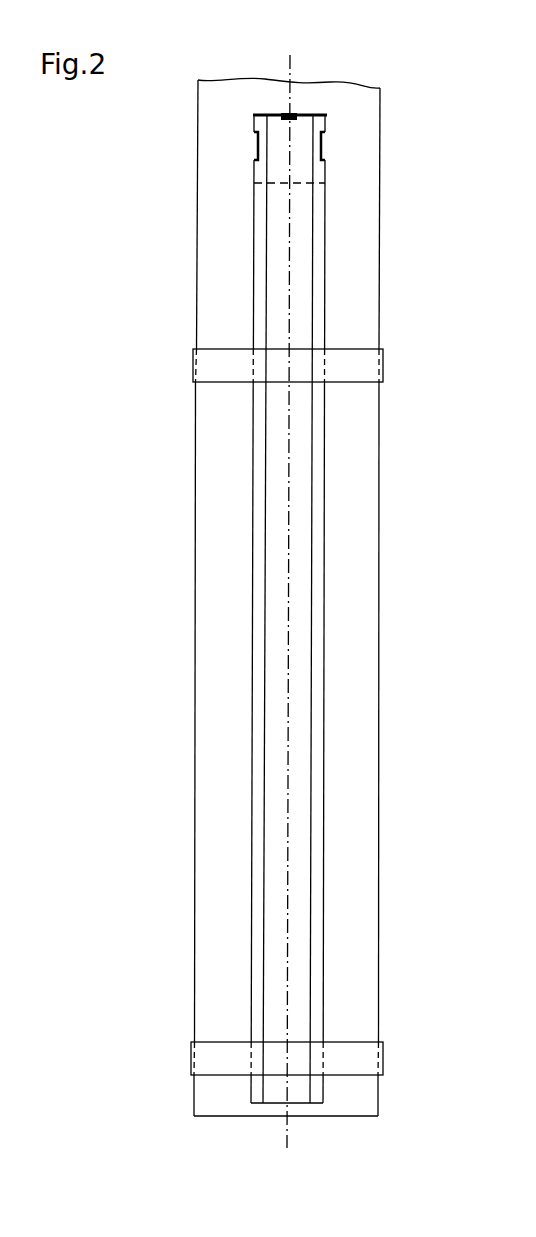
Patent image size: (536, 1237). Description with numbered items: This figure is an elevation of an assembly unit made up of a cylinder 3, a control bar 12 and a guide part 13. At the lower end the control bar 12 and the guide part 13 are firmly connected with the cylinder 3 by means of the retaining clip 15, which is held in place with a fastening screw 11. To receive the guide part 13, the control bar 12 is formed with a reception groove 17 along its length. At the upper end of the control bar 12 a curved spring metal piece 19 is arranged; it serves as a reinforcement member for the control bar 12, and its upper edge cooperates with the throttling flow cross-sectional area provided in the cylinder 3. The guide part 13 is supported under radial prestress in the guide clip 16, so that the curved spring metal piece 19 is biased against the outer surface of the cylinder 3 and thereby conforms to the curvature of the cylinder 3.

The cylinder 3 is at (378, 805).
The fastening screw 11 is at (292, 110).
The control bar 12 is at (255, 558).
The guide part 13 is at (275, 500).
The retaining clip 15 is at (353, 1060).
The guide clip 16 is at (362, 365).
The reception groove 17 is at (312, 698).
The curved spring metal piece 19 is at (327, 120).